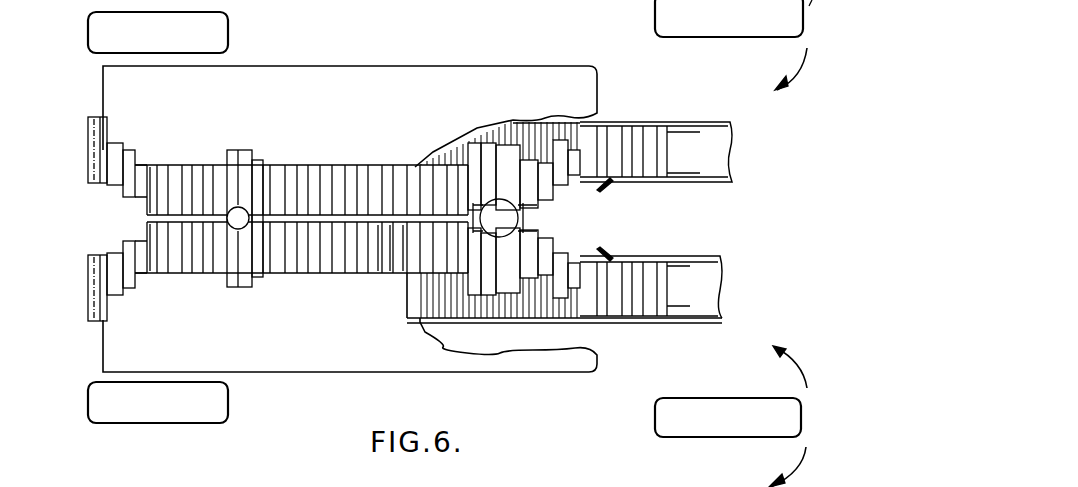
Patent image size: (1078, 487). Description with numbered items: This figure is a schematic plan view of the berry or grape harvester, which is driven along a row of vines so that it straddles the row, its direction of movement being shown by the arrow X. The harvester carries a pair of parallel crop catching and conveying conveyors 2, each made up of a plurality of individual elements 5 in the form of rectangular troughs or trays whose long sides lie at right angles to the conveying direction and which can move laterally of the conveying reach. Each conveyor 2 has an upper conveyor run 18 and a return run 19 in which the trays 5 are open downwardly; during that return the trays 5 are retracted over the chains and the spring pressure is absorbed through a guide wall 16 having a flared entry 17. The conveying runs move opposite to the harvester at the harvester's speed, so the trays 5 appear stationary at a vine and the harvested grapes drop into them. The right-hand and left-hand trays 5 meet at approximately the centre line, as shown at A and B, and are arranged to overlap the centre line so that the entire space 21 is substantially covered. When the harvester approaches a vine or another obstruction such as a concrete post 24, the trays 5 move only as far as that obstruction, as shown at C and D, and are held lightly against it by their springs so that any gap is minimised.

The crop catching and conveying conveyor 2 is at (338, 163).
The element 5 is at (403, 250).
The guide wall 16 is at (657, 263).
The flared entry 17 is at (597, 253).
The upper conveyor run 18 is at (293, 183).
The return run 19 is at (560, 297).
The space 21 is at (113, 215).
The concrete post 24 is at (233, 222).
The meeting point of trays A is at (173, 207).
The meeting point of trays B is at (413, 212).
The tray position at obstruction C is at (246, 288).
The tray position at obstruction D is at (489, 135).
The direction of movement X is at (97, 217).